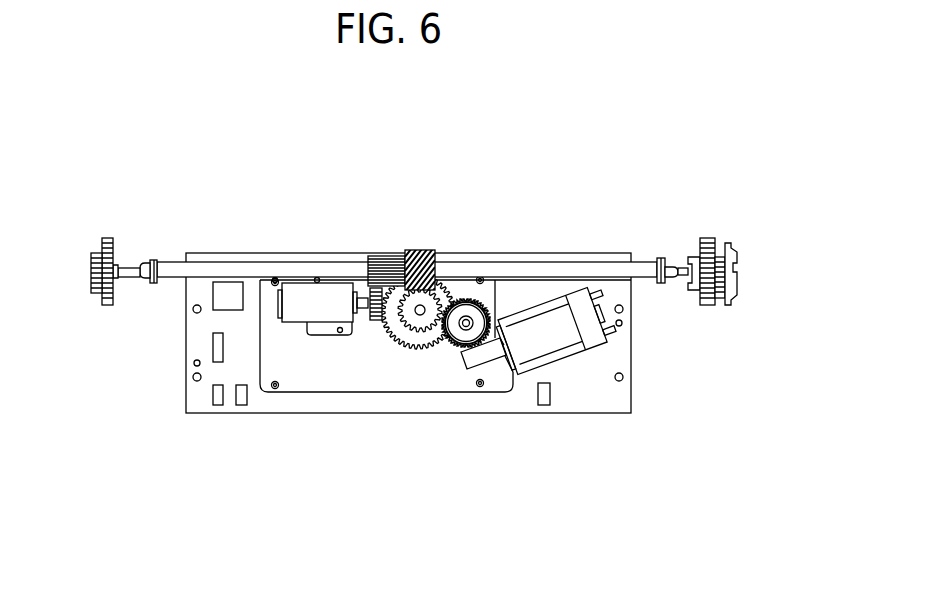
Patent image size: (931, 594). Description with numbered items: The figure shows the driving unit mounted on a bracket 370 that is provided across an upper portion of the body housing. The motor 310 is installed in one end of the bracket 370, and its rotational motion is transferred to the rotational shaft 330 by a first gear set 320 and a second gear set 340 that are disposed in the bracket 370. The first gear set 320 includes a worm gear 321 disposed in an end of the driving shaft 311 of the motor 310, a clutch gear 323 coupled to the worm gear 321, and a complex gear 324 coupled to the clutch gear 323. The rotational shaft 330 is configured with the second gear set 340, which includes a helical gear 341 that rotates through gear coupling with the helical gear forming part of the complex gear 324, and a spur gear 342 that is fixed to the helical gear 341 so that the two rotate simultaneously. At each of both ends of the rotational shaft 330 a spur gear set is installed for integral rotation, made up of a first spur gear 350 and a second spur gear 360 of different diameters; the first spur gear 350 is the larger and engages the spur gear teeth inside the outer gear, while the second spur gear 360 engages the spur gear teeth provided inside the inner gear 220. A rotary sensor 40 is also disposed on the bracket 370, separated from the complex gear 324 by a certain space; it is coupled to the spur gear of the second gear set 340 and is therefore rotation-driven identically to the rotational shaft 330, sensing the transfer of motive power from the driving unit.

The rotary sensor 40 is at (300, 295).
The inner gear 220 is at (737, 268).
The motor 310 is at (573, 338).
The driving shaft 311 is at (502, 355).
The first gear set 320 is at (447, 482).
The worm gear 321 is at (463, 363).
The clutch gear 323 is at (450, 347).
The complex gear 324 is at (398, 338).
The rotational shaft 330 is at (517, 273).
The second gear set 340 is at (405, 211).
The helical gear 341 is at (439, 237).
The spur gear 342 is at (385, 252).
The first spur gear 350 is at (110, 237).
The second spur gear 360 is at (96, 252).
The bracket 370 is at (583, 395).